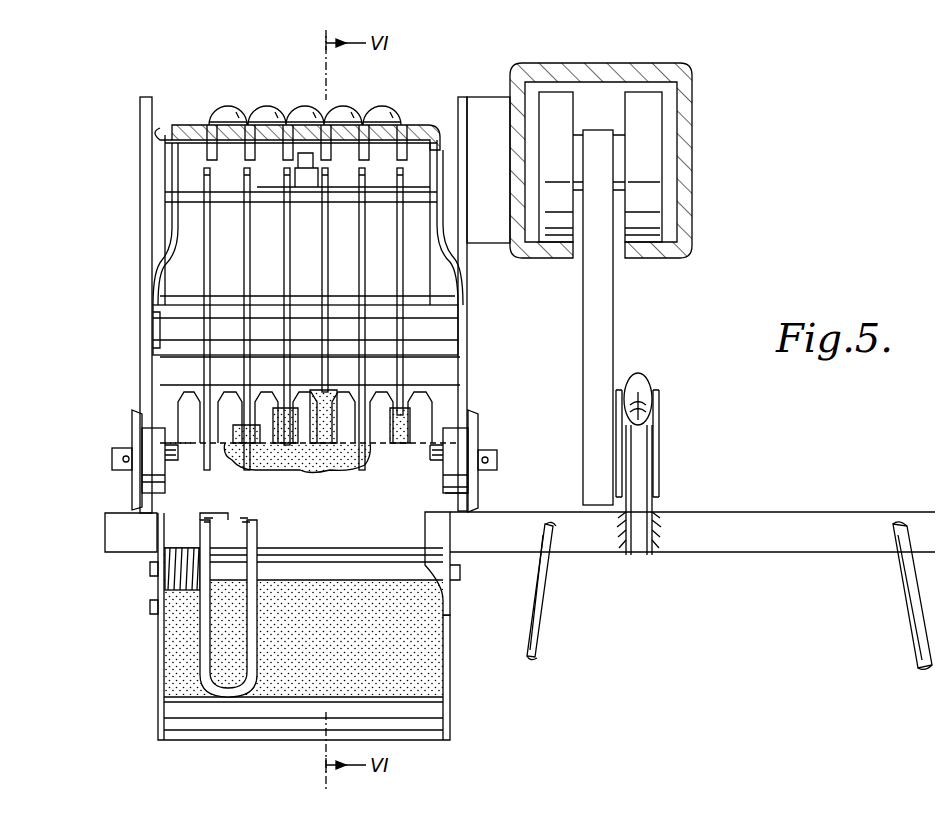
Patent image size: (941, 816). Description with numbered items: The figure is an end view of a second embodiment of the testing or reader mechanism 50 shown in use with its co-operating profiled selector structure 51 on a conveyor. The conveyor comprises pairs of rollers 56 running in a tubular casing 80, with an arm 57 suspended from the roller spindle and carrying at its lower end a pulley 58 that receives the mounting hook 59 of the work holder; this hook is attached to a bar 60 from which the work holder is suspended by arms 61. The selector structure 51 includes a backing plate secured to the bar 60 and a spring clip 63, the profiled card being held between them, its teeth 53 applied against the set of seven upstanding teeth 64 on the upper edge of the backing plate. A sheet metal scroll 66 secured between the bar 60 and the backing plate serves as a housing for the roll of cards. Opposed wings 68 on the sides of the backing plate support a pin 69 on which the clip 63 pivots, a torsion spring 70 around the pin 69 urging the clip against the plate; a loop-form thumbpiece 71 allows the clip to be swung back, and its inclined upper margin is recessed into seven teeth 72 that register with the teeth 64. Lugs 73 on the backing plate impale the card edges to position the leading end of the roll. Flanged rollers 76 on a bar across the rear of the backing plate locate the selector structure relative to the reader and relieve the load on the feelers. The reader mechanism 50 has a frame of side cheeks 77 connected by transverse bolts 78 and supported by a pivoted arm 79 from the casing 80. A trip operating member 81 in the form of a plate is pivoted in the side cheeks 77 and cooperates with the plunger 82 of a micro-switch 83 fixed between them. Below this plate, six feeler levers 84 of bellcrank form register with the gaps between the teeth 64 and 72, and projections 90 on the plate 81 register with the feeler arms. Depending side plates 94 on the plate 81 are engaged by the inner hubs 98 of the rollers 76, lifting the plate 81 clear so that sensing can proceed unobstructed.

The testing or reader mechanism 50 is at (412, 122).
The profiled selector structure 51 is at (150, 584).
The teeth 53 is at (325, 430).
The rollers 56 is at (633, 128).
The arm 57 is at (605, 320).
The pulley 58 is at (659, 440).
The mounting hook 59 is at (633, 375).
The bar 60 is at (733, 520).
The arms 61 is at (548, 606).
The spring clip 63 is at (188, 470).
The upstanding teeth 64 is at (232, 398).
The sheet metal scroll 66 is at (433, 716).
The wings 68 is at (158, 650).
The pin 69 is at (395, 580).
The torsion spring 70 is at (176, 558).
The loop-form thumbpiece 71 is at (262, 652).
The teeth 72 is at (192, 418).
The lugs 73 is at (140, 440).
The flanged rollers 76 is at (115, 462).
The side cheeks 77 is at (140, 137).
The transverse bolts 78 is at (160, 325).
The pivoted arm 79 is at (499, 178).
The tubular casing 80 is at (690, 195).
The trip operating member 81 is at (305, 153).
The plunger 82 is at (325, 140).
The micro-switch 83 is at (425, 282).
The feeler levers 84 is at (247, 272).
The projections 90 is at (208, 125).
The side plates 94 is at (168, 243).
The inner hubs 98 is at (455, 478).